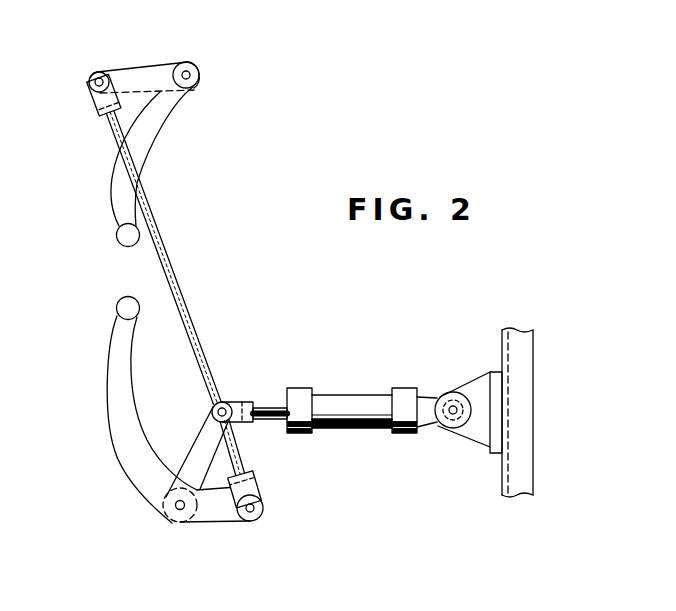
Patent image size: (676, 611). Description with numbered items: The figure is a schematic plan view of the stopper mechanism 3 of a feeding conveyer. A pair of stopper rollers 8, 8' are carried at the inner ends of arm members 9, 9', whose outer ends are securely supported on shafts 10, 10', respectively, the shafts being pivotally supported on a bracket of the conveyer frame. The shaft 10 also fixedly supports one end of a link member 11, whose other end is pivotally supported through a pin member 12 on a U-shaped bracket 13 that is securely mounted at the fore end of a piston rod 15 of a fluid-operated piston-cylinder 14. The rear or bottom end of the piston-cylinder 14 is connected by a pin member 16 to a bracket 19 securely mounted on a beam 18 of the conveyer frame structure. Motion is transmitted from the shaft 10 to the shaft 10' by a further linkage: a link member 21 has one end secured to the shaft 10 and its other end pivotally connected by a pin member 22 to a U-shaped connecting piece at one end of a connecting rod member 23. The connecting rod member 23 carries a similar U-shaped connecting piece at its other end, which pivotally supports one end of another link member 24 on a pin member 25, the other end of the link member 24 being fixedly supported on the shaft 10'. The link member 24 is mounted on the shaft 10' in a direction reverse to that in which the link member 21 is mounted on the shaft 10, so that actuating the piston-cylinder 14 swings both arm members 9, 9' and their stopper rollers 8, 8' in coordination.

The stopper mechanism 3 is at (260, 243).
The stopper roller 8 is at (111, 298).
The stopper roller 8' is at (107, 231).
The arm member 9 is at (136, 419).
The arm member 9' is at (135, 156).
The shaft 10 is at (158, 510).
The shaft 10' is at (214, 74).
The link member 11 is at (204, 435).
The pin member 12 is at (223, 404).
The U-shaped bracket 13 is at (243, 425).
The fluid-operated piston-cylinder 14 is at (348, 417).
The piston rod 15 is at (270, 406).
The pin member 16 is at (453, 417).
The beam 18 is at (527, 452).
The bracket 19 is at (472, 392).
The link member 21 is at (214, 513).
The pin member 22 is at (258, 521).
The connecting rod member 23 is at (176, 283).
The link member 24 is at (150, 68).
The pin member 25 is at (93, 74).